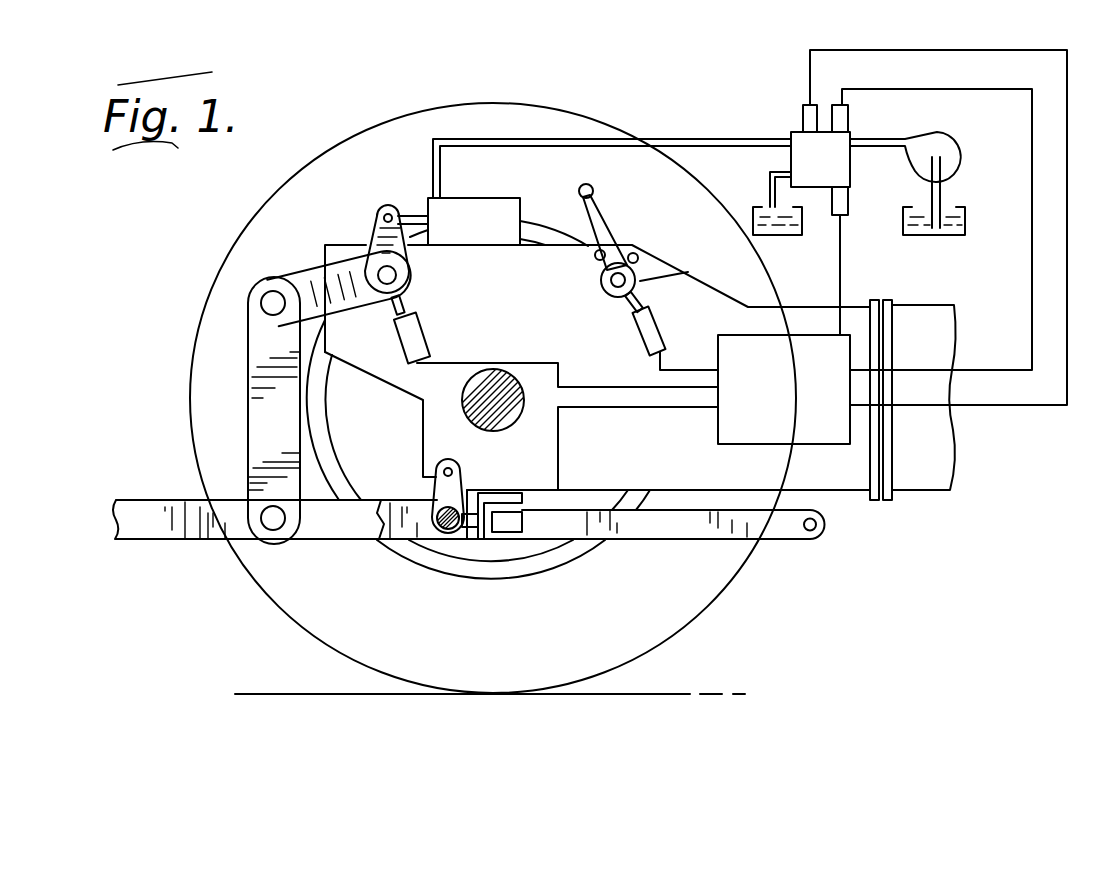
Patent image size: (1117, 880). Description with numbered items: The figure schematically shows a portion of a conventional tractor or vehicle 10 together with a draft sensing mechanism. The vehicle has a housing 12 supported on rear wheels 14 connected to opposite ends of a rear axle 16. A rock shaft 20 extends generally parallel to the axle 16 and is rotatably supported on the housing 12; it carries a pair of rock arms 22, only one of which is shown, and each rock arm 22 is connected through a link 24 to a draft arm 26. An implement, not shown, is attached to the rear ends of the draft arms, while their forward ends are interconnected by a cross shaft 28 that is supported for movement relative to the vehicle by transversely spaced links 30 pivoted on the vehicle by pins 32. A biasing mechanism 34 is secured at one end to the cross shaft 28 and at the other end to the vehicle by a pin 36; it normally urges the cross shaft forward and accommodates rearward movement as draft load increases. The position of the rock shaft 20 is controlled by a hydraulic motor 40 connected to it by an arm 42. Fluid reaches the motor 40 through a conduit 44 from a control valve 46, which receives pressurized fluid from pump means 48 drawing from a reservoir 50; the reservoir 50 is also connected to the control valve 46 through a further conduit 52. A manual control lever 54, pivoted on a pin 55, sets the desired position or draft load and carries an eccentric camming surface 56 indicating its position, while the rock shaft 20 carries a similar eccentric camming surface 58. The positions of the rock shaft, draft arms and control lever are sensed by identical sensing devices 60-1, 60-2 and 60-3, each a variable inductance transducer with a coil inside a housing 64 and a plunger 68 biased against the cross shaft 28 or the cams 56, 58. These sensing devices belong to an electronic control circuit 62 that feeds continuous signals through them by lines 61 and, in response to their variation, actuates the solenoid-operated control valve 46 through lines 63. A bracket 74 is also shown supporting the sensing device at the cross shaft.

The vehicle 10 is at (907, 549).
The housing 12 is at (937, 484).
The rear wheels 14 is at (478, 112).
The rear axle 16 is at (515, 415).
The rock shaft 20 is at (279, 355).
The rock arm 22 is at (300, 278).
The link 24 is at (262, 404).
The draft arm 26 is at (155, 505).
The cross shaft 28 is at (447, 531).
The link 30 is at (438, 489).
The pin 32 is at (455, 472).
The biasing mechanism 34 is at (662, 542).
The pin 36 is at (810, 531).
The hydraulic motor 40 is at (426, 189).
The arm 42 is at (376, 212).
The conduit 44 is at (700, 137).
The control valve 46 is at (791, 138).
The pump means 48 is at (947, 156).
The reservoir 50 is at (787, 228).
The conduit 52 is at (770, 176).
The manual control lever 54 is at (603, 220).
The pin 55 is at (602, 285).
The camming surface 56 is at (640, 280).
The camming surface 58 is at (408, 289).
The sensing device 60-1 is at (622, 339).
The sensing device 60-2 is at (436, 346).
The sensing device 60-3 is at (528, 542).
The lines 61 is at (683, 373).
The electronic control circuit 62 is at (800, 408).
The lines 63 is at (1033, 190).
The housing 64 is at (668, 337).
The plunger 68 is at (683, 263).
The bracket 74 is at (488, 542).